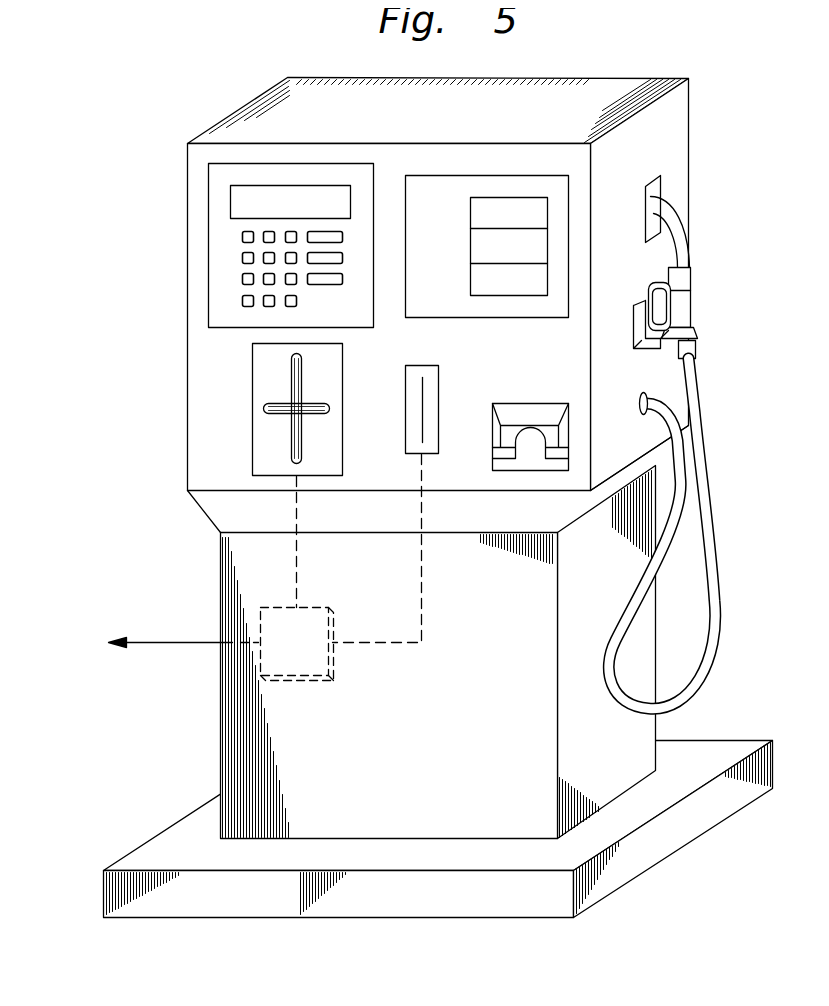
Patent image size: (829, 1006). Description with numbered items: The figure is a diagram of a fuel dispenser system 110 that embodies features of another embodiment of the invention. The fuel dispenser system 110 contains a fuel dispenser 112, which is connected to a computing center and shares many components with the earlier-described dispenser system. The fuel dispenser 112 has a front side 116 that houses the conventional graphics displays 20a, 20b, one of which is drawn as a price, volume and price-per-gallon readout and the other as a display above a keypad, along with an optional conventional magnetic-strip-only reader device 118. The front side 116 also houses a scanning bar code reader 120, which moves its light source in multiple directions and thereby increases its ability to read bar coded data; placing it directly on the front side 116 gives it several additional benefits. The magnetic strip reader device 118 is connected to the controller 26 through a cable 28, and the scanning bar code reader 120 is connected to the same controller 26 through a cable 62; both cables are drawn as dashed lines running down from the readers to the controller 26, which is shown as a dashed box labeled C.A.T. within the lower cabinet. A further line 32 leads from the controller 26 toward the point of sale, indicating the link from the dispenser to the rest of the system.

The fuel dispenser system 110 is at (75, 95).
The fuel dispenser 112 is at (701, 113).
The front side 116 is at (197, 242).
The graphics display 20b is at (314, 196).
The graphics display 20a is at (493, 293).
The scanning bar code reader 120 is at (328, 358).
The magnetic-strip-only reader device 118 is at (436, 382).
The cable 62 is at (306, 562).
The cable 28 is at (378, 647).
The controller 26 is at (300, 678).
The connection to point of sale 32 is at (158, 642).